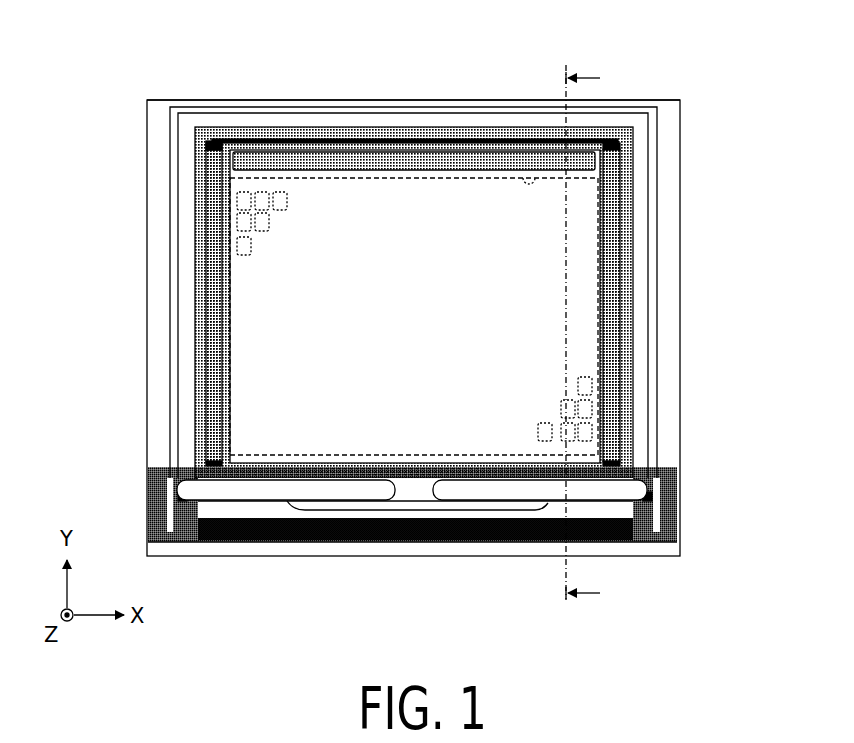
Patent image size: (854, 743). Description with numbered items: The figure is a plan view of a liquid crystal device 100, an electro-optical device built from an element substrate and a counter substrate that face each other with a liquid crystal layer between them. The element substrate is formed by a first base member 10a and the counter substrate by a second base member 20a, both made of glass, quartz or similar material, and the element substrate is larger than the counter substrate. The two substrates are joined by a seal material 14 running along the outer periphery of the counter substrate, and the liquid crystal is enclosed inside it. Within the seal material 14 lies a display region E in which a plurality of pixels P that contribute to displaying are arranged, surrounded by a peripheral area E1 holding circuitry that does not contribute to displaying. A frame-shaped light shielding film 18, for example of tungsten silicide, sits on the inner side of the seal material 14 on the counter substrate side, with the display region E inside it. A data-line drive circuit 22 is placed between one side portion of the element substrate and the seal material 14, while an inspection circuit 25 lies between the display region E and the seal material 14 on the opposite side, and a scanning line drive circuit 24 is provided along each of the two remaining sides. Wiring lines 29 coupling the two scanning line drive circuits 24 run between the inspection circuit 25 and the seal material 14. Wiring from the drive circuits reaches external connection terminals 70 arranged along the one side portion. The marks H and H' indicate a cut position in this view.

The liquid crystal device 100 is at (718, 35).
The first base member 10a is at (248, 100).
The seal material 14 is at (657, 220).
The second base member 20a is at (288, 106).
The scanning line drive circuit 24 is at (215, 320).
The peripheral area E1 is at (220, 140).
The wiring lines 29 is at (385, 137).
The inspection circuit 25 is at (460, 160).
The light shielding film 18 is at (300, 462).
The display region E is at (533, 186).
The pixels P is at (256, 240).
The data-line drive circuit 22 is at (212, 510).
The external connection terminals 70 is at (299, 546).
The dimension H' is at (596, 332).
The dimension H is at (593, 595).